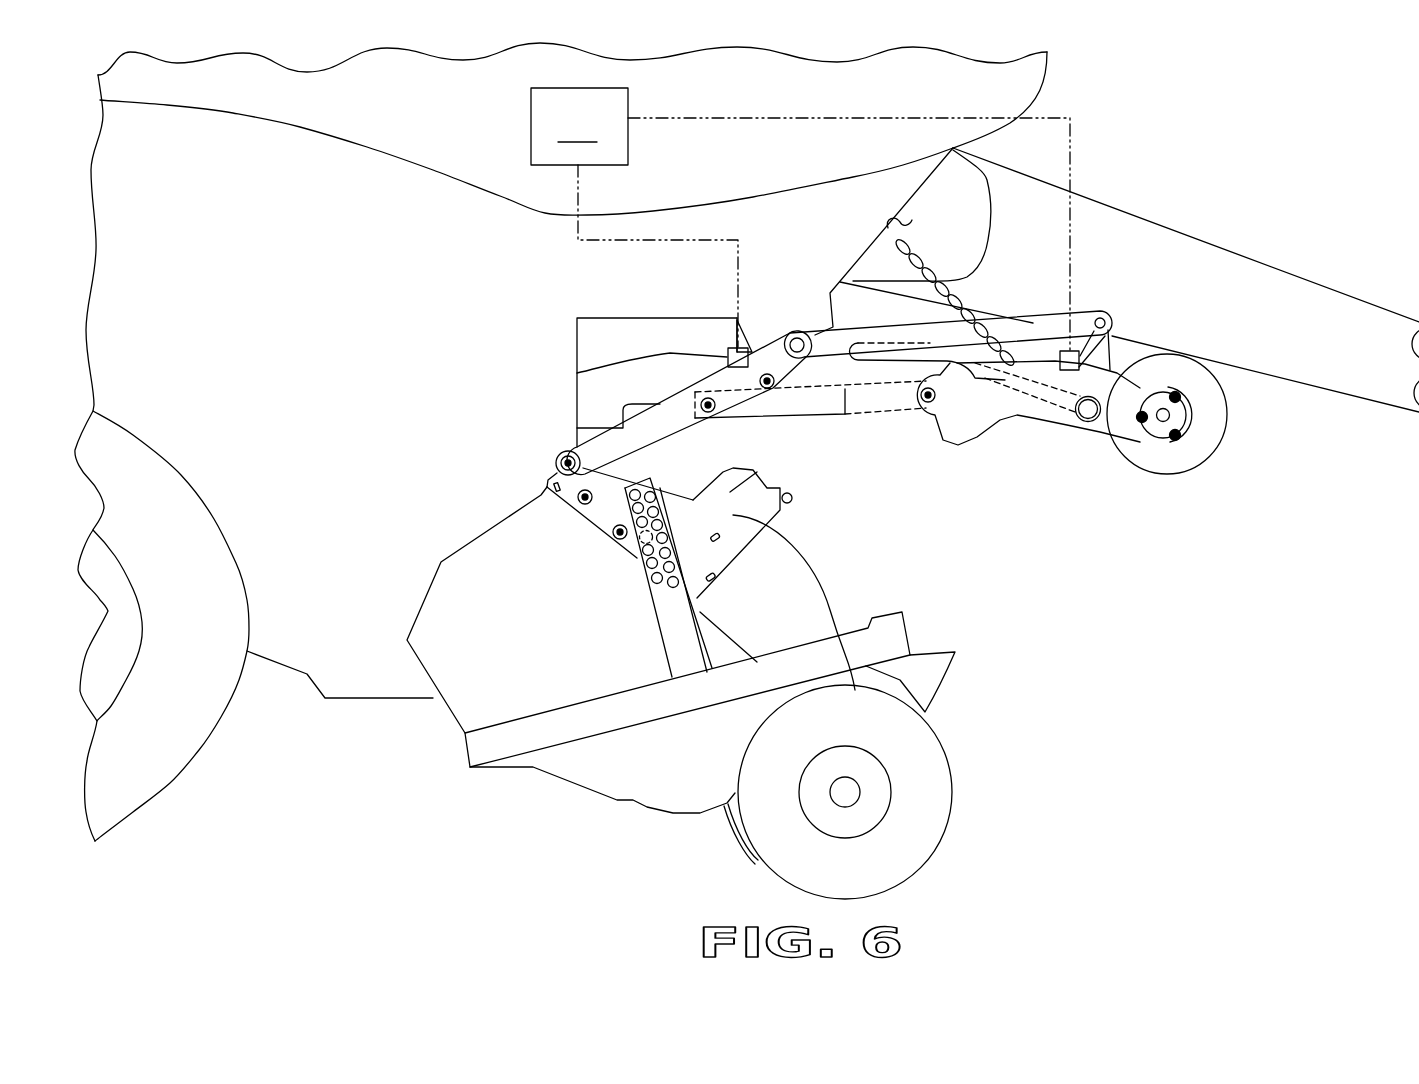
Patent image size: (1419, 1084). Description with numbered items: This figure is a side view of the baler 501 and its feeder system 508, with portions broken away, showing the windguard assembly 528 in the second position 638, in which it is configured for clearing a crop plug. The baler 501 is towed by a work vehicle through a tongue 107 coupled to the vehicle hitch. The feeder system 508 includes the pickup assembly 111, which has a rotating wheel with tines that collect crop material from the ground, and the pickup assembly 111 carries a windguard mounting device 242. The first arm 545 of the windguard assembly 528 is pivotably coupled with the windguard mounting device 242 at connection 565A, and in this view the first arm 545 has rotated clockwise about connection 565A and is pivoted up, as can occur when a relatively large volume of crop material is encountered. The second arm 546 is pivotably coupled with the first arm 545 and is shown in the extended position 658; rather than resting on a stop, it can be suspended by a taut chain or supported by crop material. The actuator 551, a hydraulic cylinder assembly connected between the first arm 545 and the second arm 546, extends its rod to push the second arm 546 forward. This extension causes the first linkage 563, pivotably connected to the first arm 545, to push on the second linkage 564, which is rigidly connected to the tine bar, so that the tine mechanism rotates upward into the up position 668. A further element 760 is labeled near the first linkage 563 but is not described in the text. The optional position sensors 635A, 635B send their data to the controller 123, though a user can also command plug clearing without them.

The tongue 107 is at (1320, 280).
The pickup assembly 111 is at (605, 756).
The controller 123 is at (800, 219).
The windguard mounting device 242 is at (735, 516).
The baler 501 is at (1205, 167).
The feeder system 508 is at (1190, 772).
The windguard assembly 528 is at (1258, 465).
The first arm 545 is at (663, 408).
The second arm 546 is at (1035, 413).
The actuator 551 is at (805, 410).
The first linkage 563 is at (1002, 328).
The second linkage 564 is at (1103, 348).
The connection 565A is at (556, 452).
The sensor 635A is at (727, 353).
The sensor 635B is at (1103, 350).
The second position 638 is at (1157, 578).
The extended position 658 is at (1118, 428).
The up position 668 is at (973, 366).
The sensor tab 760 is at (917, 362).